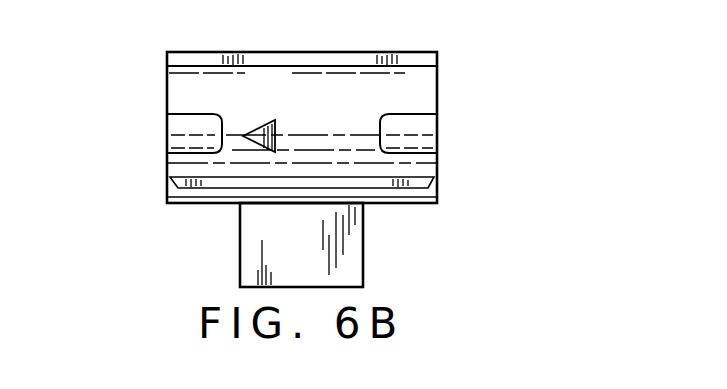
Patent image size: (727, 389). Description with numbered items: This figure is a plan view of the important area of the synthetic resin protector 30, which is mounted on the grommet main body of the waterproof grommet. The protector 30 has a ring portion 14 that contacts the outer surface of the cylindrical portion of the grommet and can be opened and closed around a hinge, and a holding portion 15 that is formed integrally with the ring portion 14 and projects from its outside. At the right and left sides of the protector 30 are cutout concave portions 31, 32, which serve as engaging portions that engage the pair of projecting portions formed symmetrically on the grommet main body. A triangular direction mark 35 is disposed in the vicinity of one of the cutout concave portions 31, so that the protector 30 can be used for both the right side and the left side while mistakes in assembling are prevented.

The ring portion 14 is at (403, 74).
The holding portion 15 is at (258, 259).
The protector 30 is at (470, 80).
The cutout concave portion 31 is at (173, 132).
The cutout concave portion 32 is at (437, 139).
The triangular direction mark 35 is at (252, 122).